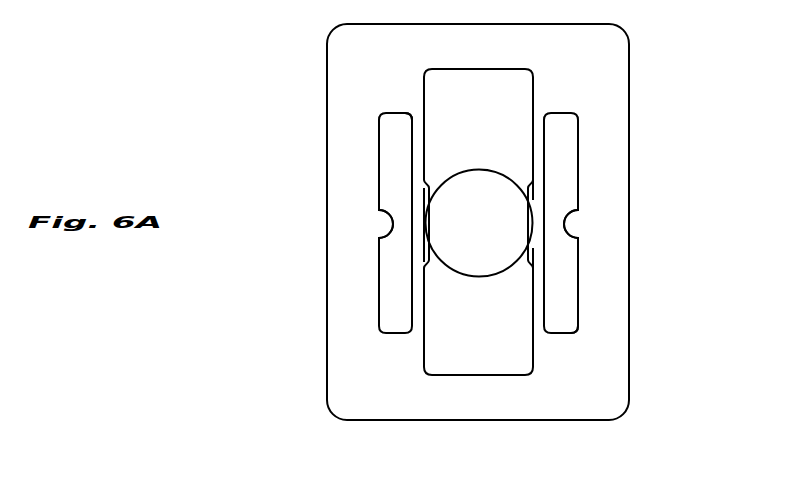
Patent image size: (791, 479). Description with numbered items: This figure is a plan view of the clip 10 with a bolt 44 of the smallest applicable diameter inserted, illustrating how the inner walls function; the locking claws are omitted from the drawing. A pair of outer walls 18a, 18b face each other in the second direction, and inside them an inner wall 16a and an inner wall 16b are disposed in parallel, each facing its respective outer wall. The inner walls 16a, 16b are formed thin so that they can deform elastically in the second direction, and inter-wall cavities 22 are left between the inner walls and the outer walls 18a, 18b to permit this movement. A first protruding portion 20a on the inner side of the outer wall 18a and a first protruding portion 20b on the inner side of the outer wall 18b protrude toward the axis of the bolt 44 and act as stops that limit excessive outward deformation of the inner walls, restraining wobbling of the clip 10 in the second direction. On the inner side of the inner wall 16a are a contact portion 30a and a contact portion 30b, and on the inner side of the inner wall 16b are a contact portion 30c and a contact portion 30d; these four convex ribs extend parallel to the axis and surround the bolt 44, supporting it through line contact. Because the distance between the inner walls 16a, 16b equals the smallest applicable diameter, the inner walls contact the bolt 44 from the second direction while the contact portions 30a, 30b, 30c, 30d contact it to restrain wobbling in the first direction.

The clip 10 is at (494, 464).
The inner wall 16a is at (418, 300).
The inner wall 16b is at (540, 292).
The outer wall 18a is at (352, 148).
The outer wall 18b is at (605, 139).
The first protruding portion 20a is at (385, 223).
The first protruding portion 20b is at (575, 219).
The inter-wall cavity 22 is at (388, 131).
The contact portion 30a is at (426, 192).
The contact portion 30b is at (428, 255).
The contact portion 30c is at (533, 190).
The contact portion 30d is at (533, 255).
The bolt 44 is at (479, 195).